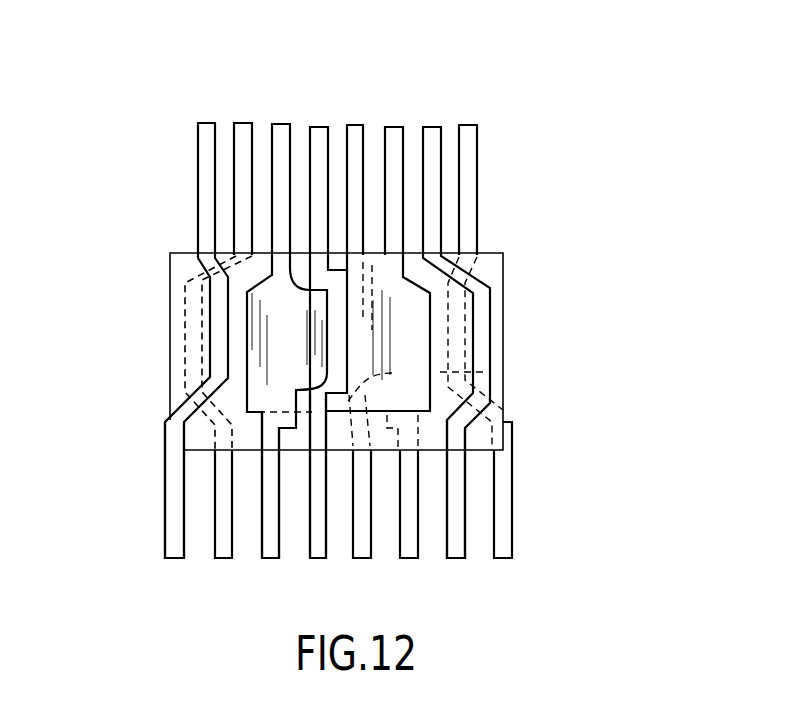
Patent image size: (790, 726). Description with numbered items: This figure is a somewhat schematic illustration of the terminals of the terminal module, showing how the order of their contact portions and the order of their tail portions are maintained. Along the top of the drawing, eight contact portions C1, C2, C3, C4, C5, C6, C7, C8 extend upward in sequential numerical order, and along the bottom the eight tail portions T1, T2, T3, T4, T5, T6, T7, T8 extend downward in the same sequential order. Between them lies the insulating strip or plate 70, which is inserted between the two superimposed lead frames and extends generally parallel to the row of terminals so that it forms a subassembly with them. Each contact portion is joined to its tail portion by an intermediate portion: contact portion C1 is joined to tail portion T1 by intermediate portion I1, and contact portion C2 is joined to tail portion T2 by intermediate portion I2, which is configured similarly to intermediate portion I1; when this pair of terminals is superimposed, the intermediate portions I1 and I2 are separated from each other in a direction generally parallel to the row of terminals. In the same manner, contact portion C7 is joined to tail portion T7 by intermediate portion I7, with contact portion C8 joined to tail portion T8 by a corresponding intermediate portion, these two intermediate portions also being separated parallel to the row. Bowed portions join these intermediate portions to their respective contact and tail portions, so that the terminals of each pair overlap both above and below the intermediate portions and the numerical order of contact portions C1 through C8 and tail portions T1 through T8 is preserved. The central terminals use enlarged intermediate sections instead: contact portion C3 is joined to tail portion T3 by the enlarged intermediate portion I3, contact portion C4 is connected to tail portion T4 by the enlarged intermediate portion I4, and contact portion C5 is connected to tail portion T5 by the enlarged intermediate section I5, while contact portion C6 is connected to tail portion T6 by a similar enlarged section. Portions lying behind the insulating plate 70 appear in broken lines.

The insulating plate 70 is at (503, 262).
The contact portion C1 is at (207, 137).
The contact portion C2 is at (243, 123).
The contact portion C3 is at (282, 123).
The contact portion C4 is at (317, 127).
The contact portion C5 is at (353, 123).
The contact portion C6 is at (393, 133).
The contact portion C7 is at (430, 133).
The contact portion C8 is at (467, 155).
The tail portion T1 is at (175, 513).
The tail portion T2 is at (222, 530).
The tail portion T3 is at (262, 556).
The tail portion T4 is at (315, 543).
The tail portion T5 is at (363, 537).
The tail portion T6 is at (408, 543).
The tail portion T7 is at (457, 508).
The tail portion T8 is at (503, 545).
The intermediate portion I1 is at (220, 315).
The intermediate portion I2 is at (220, 268).
The enlarged intermediate portion I3 is at (283, 335).
The enlarged intermediate portion I4 is at (415, 318).
The enlarged intermediate section I5 is at (392, 373).
The intermediate portion I7 is at (483, 353).